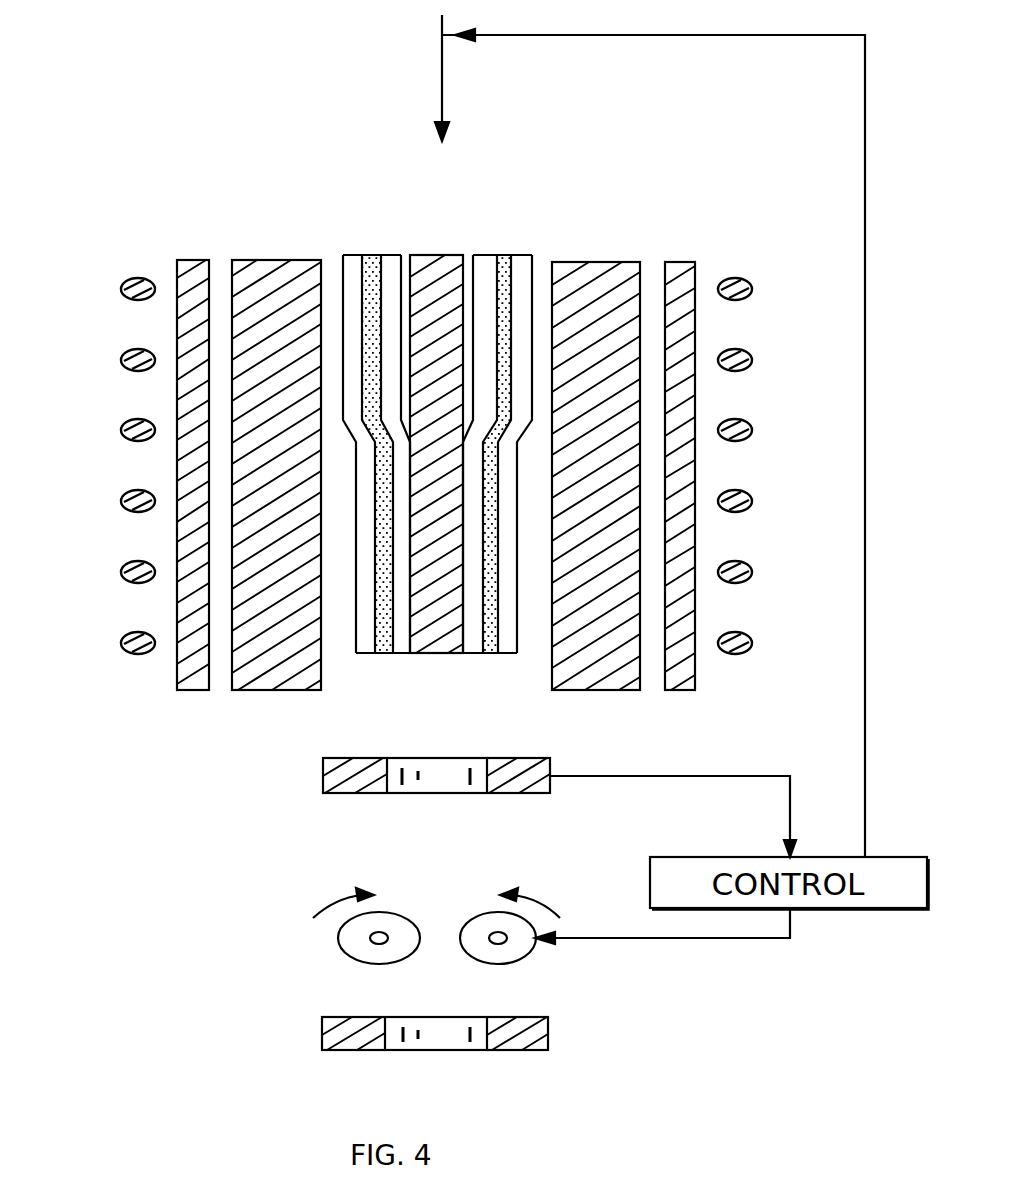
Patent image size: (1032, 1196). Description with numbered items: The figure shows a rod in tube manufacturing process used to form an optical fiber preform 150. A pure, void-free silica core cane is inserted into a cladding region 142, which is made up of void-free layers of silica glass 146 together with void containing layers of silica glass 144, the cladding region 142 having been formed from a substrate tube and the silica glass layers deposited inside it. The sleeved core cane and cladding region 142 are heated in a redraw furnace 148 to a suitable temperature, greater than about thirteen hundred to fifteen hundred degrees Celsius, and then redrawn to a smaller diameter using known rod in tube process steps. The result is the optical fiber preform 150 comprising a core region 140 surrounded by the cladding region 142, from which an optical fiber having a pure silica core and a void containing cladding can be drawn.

The core region 140 is at (430, 257).
The cladding region 142 is at (405, 251).
The void containing layers of silica glass 144 is at (504, 257).
The void-free layers of silica glass 146 is at (485, 257).
The redraw furnace 148 is at (658, 253).
The optical fiber preform 150 is at (355, 540).